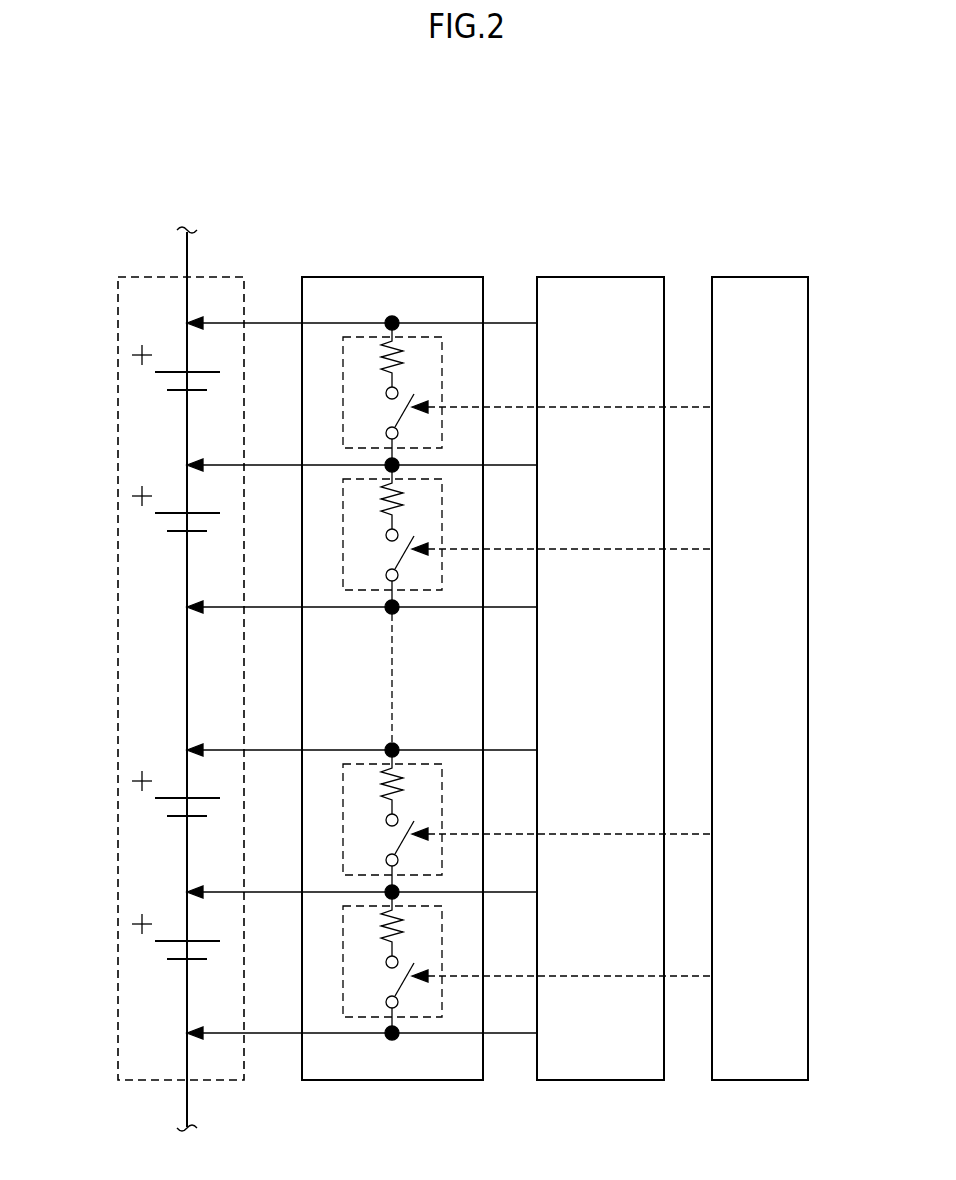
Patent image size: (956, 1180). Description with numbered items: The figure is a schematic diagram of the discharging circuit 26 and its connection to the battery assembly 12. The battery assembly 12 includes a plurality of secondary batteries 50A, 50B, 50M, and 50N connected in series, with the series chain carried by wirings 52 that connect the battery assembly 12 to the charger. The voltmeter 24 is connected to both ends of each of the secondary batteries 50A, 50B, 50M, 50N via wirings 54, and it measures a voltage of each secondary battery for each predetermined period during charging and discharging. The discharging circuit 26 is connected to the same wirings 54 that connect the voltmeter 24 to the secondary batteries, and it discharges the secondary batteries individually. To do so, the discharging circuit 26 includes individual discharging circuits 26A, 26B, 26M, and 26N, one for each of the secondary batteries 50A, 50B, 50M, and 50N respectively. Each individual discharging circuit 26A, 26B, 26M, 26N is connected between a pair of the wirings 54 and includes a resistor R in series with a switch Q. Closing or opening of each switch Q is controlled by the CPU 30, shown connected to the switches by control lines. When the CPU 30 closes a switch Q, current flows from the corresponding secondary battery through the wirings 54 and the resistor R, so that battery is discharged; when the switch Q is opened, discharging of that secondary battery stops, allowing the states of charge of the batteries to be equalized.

The battery assembly 12 is at (222, 277).
The voltmeter 24 is at (630, 277).
The discharging circuit 26 is at (455, 277).
The central processing unit 30 is at (770, 277).
The individual discharging circuit 26N is at (442, 380).
The individual discharging circuit 26M is at (442, 522).
The individual discharging circuit 26B is at (442, 807).
The individual discharging circuit 26A is at (442, 949).
The secondary battery 50N is at (155, 372).
The secondary battery 50M is at (155, 513).
The secondary battery 50B is at (155, 798).
The secondary battery 50A is at (155, 941).
The wirings 52 is at (187, 1106).
The wirings 54 is at (281, 1036).